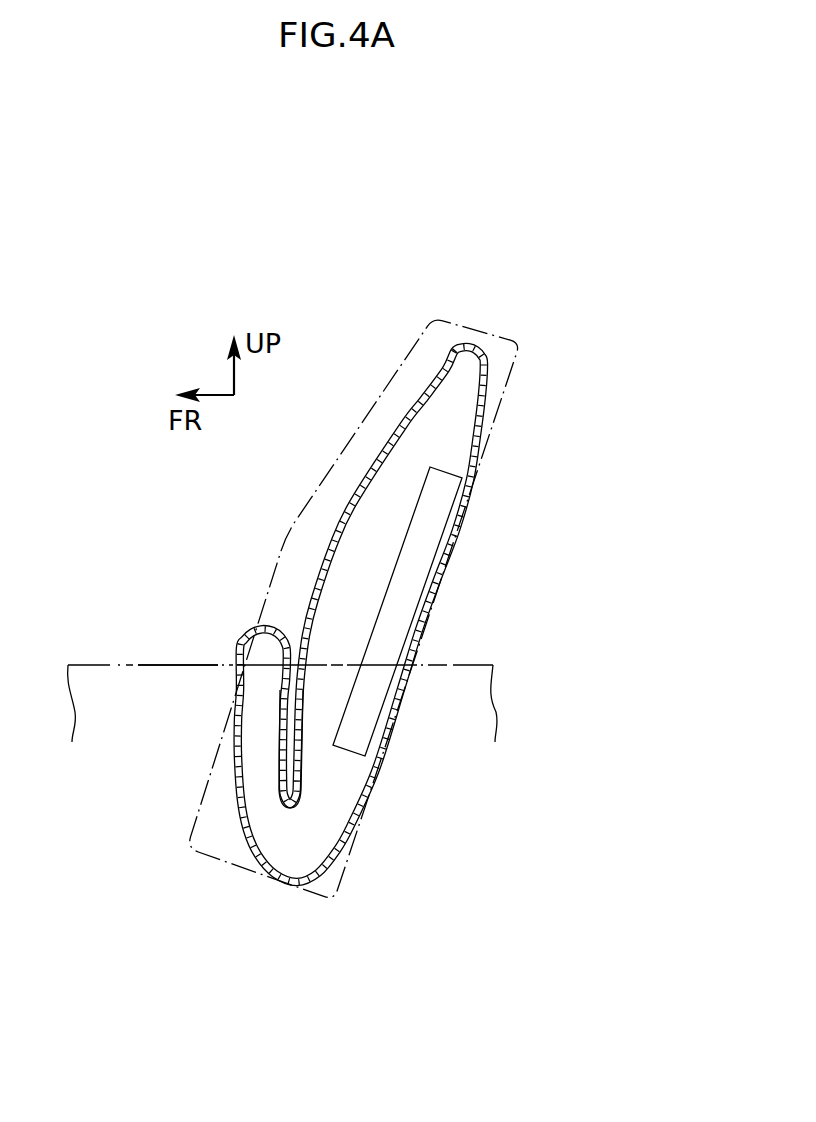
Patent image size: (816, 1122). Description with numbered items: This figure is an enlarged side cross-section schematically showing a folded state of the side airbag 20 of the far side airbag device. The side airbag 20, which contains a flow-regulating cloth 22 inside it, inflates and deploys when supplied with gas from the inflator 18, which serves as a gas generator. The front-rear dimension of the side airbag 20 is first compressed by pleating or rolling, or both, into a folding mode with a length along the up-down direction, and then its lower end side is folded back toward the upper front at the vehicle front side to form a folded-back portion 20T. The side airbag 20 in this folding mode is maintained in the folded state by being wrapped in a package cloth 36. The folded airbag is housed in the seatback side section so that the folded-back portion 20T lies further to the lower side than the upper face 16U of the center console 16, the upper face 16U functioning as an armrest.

The center console 16 is at (95, 652).
The upper face 16U is at (143, 683).
The inflator 18 is at (440, 487).
The side airbag 20 is at (450, 590).
The flow-regulating cloth 22 is at (491, 353).
The folded-back portion 20T is at (260, 733).
The package cloth 36 is at (475, 330).